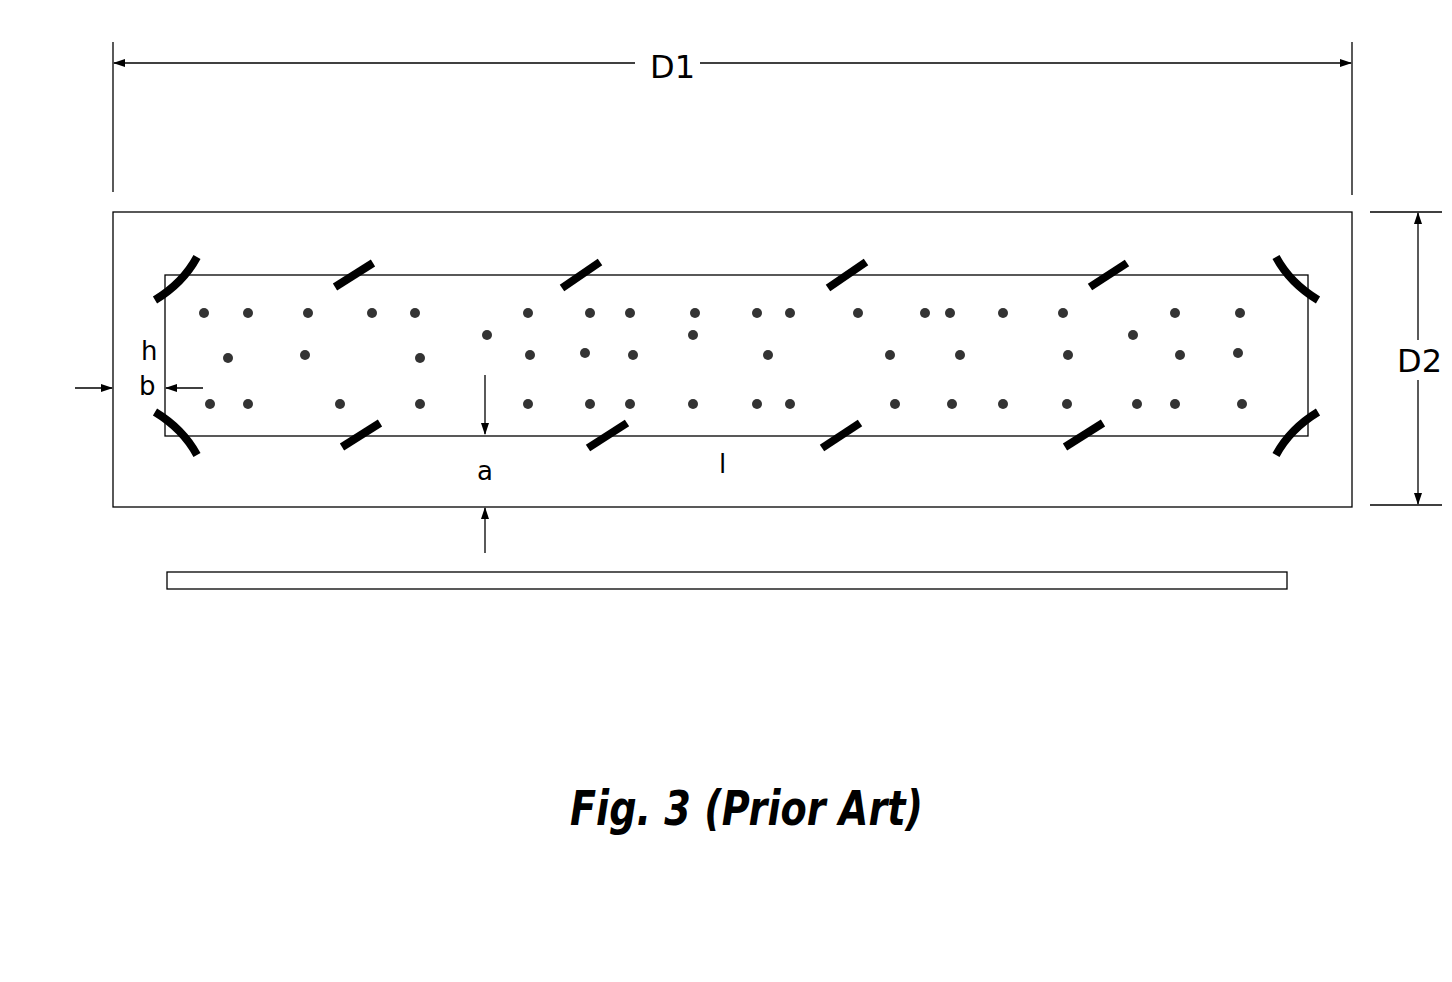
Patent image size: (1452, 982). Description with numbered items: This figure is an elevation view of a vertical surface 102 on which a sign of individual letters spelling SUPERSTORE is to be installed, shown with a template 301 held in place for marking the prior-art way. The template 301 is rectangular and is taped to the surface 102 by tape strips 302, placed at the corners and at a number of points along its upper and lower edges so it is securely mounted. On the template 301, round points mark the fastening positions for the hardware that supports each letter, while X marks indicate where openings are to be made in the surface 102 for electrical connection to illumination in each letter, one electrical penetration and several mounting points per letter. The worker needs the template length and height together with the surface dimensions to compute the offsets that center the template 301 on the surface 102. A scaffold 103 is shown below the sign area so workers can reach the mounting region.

The vertical surface 102 is at (903, 209).
The scaffold 103 is at (1200, 571).
The template 301 is at (478, 274).
The tape strips 302 is at (196, 263).